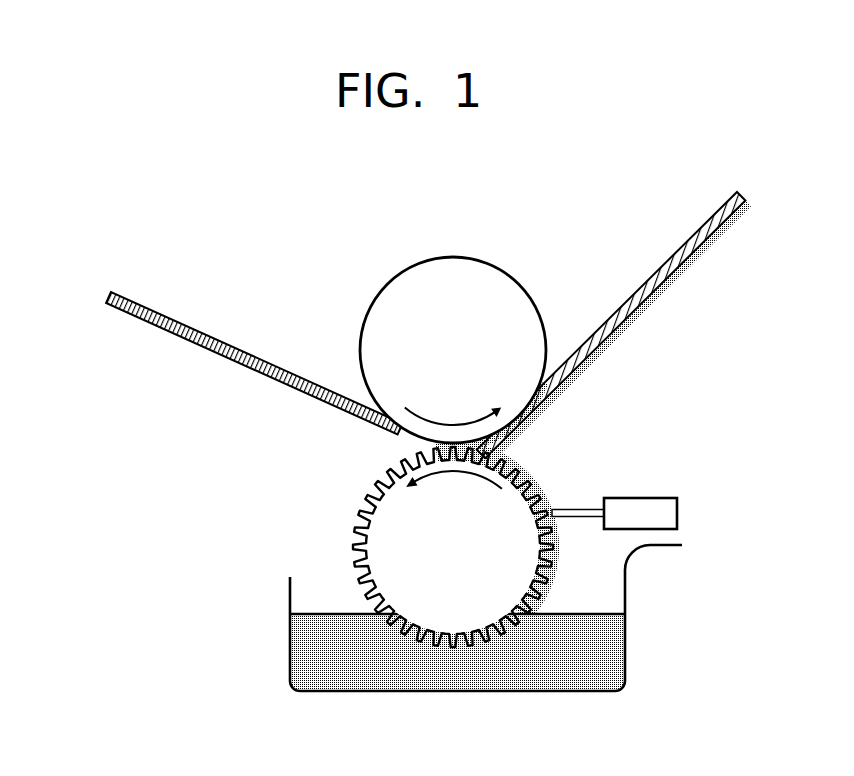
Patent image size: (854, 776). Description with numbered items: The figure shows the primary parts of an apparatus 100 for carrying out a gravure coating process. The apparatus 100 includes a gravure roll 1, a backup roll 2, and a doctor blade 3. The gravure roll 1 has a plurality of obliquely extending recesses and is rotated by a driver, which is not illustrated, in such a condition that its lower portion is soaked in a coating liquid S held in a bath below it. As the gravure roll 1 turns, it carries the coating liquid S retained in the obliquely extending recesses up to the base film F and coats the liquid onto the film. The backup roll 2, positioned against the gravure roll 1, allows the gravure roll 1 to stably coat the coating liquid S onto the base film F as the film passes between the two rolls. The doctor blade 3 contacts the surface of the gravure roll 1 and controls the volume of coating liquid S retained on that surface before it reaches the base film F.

The apparatus for carrying out a gravure coating process 100 is at (170, 415).
The gravure roll 1 is at (353, 527).
The backup roll 2 is at (465, 262).
The doctor blade 3 is at (678, 513).
The base film F is at (272, 372).
The coating liquid S is at (632, 323).